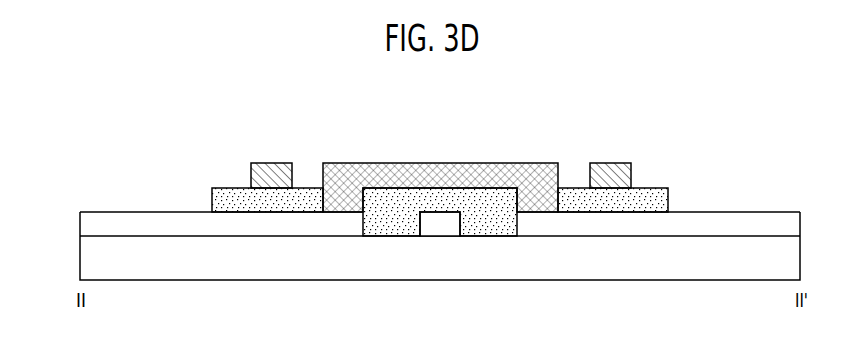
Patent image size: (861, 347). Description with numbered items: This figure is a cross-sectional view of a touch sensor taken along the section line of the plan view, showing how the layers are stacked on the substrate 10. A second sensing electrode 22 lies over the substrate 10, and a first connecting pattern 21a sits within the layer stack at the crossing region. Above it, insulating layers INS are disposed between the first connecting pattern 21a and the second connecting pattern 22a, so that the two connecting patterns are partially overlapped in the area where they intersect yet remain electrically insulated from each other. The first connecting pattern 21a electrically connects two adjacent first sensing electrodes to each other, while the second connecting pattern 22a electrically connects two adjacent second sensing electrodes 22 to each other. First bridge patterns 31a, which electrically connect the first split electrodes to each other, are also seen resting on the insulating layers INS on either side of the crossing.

The substrate 10 is at (86, 262).
The second sensing electrode 22 is at (252, 228).
The first connecting pattern 21a is at (443, 228).
The second connecting pattern 22a is at (427, 163).
The first bridge pattern 31a is at (270, 163).
The insulating layer INS is at (214, 196).